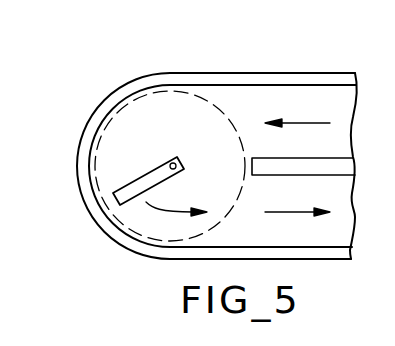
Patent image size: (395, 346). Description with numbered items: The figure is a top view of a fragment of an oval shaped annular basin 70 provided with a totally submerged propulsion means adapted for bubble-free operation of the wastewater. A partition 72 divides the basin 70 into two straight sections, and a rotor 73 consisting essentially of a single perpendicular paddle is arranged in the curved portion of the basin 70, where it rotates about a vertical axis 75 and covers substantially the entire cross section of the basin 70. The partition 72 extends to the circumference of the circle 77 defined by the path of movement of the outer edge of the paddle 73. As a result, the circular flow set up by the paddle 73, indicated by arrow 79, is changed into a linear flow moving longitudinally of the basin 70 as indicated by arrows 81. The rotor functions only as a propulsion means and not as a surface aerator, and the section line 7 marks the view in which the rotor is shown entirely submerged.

The oval shaped basin 70 is at (291, 75).
The partition 72 is at (300, 166).
The rotor paddle 73 is at (128, 191).
The vertical axis 75 is at (178, 162).
The circle 77 is at (224, 107).
The arrow 79 is at (146, 203).
The arrows 81 is at (302, 122).
The section line 7- 7 is at (52, 188).